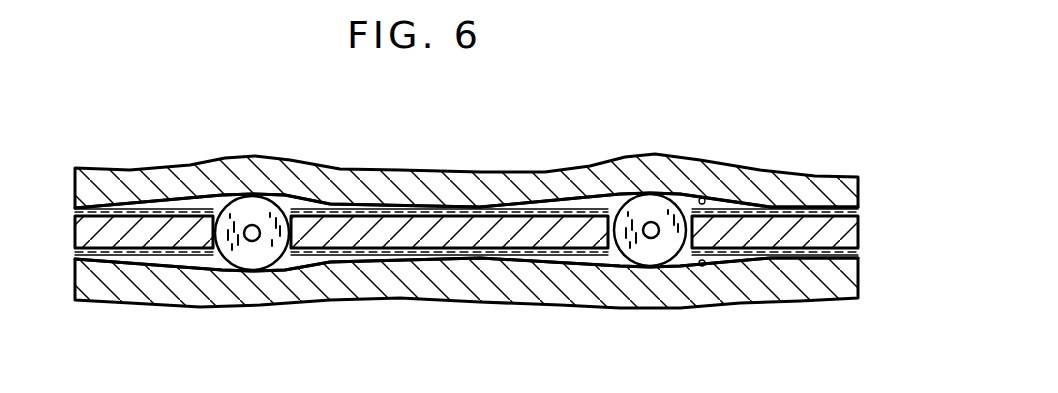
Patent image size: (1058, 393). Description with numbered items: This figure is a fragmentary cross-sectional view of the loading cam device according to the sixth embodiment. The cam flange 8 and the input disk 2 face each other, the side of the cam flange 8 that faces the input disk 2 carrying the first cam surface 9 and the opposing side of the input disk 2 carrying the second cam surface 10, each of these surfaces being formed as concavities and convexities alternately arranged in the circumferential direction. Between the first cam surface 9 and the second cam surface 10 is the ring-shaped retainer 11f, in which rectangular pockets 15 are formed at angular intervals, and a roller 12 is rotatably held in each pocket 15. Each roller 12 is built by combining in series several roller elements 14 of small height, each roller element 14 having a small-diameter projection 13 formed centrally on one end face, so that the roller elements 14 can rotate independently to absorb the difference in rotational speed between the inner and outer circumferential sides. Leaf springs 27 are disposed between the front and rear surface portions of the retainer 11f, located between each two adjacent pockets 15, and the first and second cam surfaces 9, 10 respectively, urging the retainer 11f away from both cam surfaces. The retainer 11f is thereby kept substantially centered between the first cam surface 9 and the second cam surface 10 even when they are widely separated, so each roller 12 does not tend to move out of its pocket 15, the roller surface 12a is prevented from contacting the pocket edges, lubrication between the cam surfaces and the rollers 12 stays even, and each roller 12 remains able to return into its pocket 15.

The input disk 2 is at (820, 277).
The cam flange 8 is at (801, 190).
The first cam surface 9 is at (703, 198).
The second cam surface 10 is at (703, 266).
The retainer 11f is at (832, 231).
The roller 12 is at (266, 204).
The roller surface 12a is at (204, 194).
The small-diameter projection 13 is at (651, 222).
The roller element 14 is at (639, 203).
The pocket 15 is at (283, 236).
The leaf spring 27 is at (172, 205).